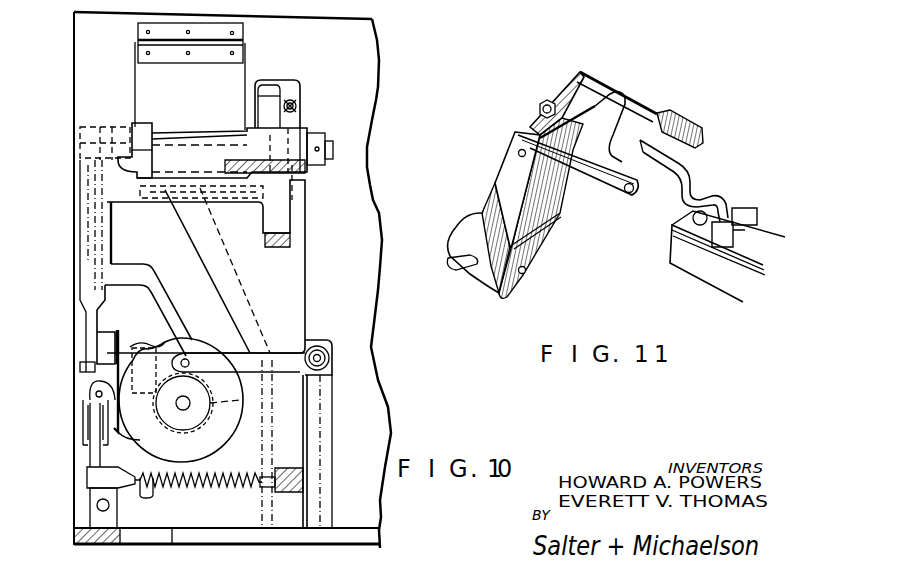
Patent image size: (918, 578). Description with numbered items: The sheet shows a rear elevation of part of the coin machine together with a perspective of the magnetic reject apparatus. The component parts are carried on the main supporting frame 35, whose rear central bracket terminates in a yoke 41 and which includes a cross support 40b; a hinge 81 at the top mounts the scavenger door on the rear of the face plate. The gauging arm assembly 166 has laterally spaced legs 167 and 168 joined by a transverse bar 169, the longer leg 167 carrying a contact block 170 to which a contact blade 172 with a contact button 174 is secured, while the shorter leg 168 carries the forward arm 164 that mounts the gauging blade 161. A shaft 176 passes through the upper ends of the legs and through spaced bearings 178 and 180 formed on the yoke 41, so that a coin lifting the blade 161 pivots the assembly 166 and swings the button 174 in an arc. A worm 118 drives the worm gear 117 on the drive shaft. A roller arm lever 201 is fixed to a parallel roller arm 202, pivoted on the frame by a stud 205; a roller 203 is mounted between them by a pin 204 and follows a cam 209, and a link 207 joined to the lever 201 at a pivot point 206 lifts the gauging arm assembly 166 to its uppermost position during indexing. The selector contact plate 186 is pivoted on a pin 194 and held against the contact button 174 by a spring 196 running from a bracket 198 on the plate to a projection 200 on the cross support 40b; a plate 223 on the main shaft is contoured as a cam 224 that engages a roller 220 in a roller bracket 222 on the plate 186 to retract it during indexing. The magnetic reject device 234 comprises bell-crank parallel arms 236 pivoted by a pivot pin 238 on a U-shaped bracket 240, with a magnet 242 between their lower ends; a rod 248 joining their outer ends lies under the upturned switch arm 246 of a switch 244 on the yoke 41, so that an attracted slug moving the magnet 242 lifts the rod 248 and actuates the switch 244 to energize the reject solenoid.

In FIG. 10, the main supporting frame 35 is at (90, 530).
In FIG. 10, the hinge 81 is at (208, 30).
In FIG. 10, the bearing 178 is at (133, 124).
In FIG. 10, the shaft 176 is at (166, 133).
In FIG. 10, the yoke 41 is at (212, 136).
In FIG. 10, the bearing 180 is at (318, 131).
In FIG. 10, the gauging arm assembly 166 is at (313, 118).
In FIG. 10, the leg 168 is at (252, 80).
In FIG. 10, the gauging blade 161 is at (277, 81).
In FIG. 10, the arm 164 is at (278, 105).
In FIG. 10, the leg 167 is at (88, 188).
In FIG. 10, the link 207 is at (97, 240).
In FIG. 10, the roller arm 202 is at (275, 360).
In FIG. 10, the transverse bar 169 is at (217, 193).
In FIG. 10, the pin 204 is at (200, 343).
In FIG. 10, the roller 203 is at (184, 357).
In FIG. 10, the stud 205 is at (332, 352).
In FIG. 10, the pivot point 206 is at (105, 285).
In FIG. 10, the roller arm lever 201 is at (161, 283).
In FIG. 10, the contact block 170 is at (108, 343).
In FIG. 10, the worm 118 is at (162, 435).
In FIG. 10, the worm gear 117 is at (203, 403).
In FIG. 10, the plate 223 is at (228, 422).
In FIG. 10, the cam 224 is at (125, 344).
In FIG. 10, the contact blade 172 is at (110, 364).
In FIG. 10, the contact button 174 is at (117, 432).
In FIG. 10, the roller 220 is at (88, 387).
In FIG. 10, the roller bracket 222 is at (83, 407).
In FIG. 10, the selector contact plate 186 is at (88, 452).
In FIG. 10, the bracket 198 is at (90, 473).
In FIG. 10, the pin 194 is at (93, 510).
In FIG. 10, the cam 209 is at (201, 423).
In FIG. 10, the spring 196 is at (195, 480).
In FIG. 10, the projection 200 is at (262, 486).
In FIG. 10, the cross support 40b is at (288, 493).
In FIG. 11, the magnetic reject device 234 is at (648, 100).
In FIG. 11, the U-shaped bracket 240 is at (527, 108).
In FIG. 11, the magnet 242 is at (468, 222).
In FIG. 11, the parallel arms 236 is at (690, 122).
In FIG. 11, the pivot pin 238 is at (608, 90).
In FIG. 11, the rod 248 is at (655, 192).
In FIG. 11, the switch arm 246 is at (690, 180).
In FIG. 11, the switch 244 is at (702, 267).